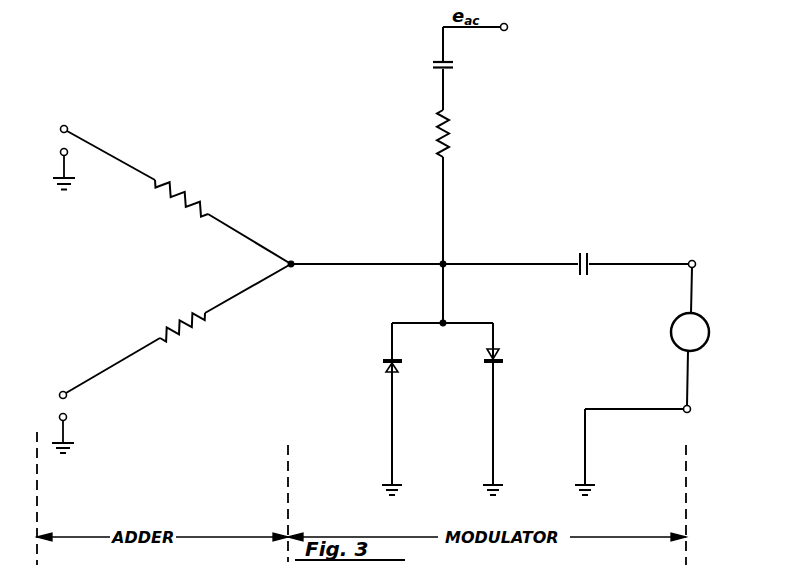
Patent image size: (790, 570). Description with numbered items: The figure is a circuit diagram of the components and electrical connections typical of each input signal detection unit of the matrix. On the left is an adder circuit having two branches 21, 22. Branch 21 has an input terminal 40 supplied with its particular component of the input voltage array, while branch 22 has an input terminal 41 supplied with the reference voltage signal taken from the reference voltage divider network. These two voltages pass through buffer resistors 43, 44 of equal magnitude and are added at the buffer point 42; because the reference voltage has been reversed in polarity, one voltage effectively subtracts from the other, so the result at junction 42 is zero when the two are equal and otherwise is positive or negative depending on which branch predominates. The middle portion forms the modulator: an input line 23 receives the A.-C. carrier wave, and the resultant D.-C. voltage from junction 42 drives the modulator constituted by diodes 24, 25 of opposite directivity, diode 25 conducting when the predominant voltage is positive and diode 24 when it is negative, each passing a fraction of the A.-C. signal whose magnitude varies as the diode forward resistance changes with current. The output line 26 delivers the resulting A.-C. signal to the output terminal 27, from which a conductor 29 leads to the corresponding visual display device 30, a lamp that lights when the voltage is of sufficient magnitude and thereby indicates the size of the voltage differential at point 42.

The adder circuit branch 21 is at (113, 158).
The adder circuit branch 22 is at (115, 367).
The input line 23 is at (445, 200).
The diode 24 is at (390, 406).
The diode 25 is at (491, 399).
The output line 26 is at (356, 263).
The output terminal 27 is at (696, 262).
The conductor 29 is at (693, 297).
The visual display device 30 is at (706, 344).
The input terminal 40 is at (67, 125).
The input terminal 41 is at (60, 394).
The buffer point 42 is at (292, 262).
The buffer resistor 43 is at (182, 197).
The buffer resistor 44 is at (203, 313).